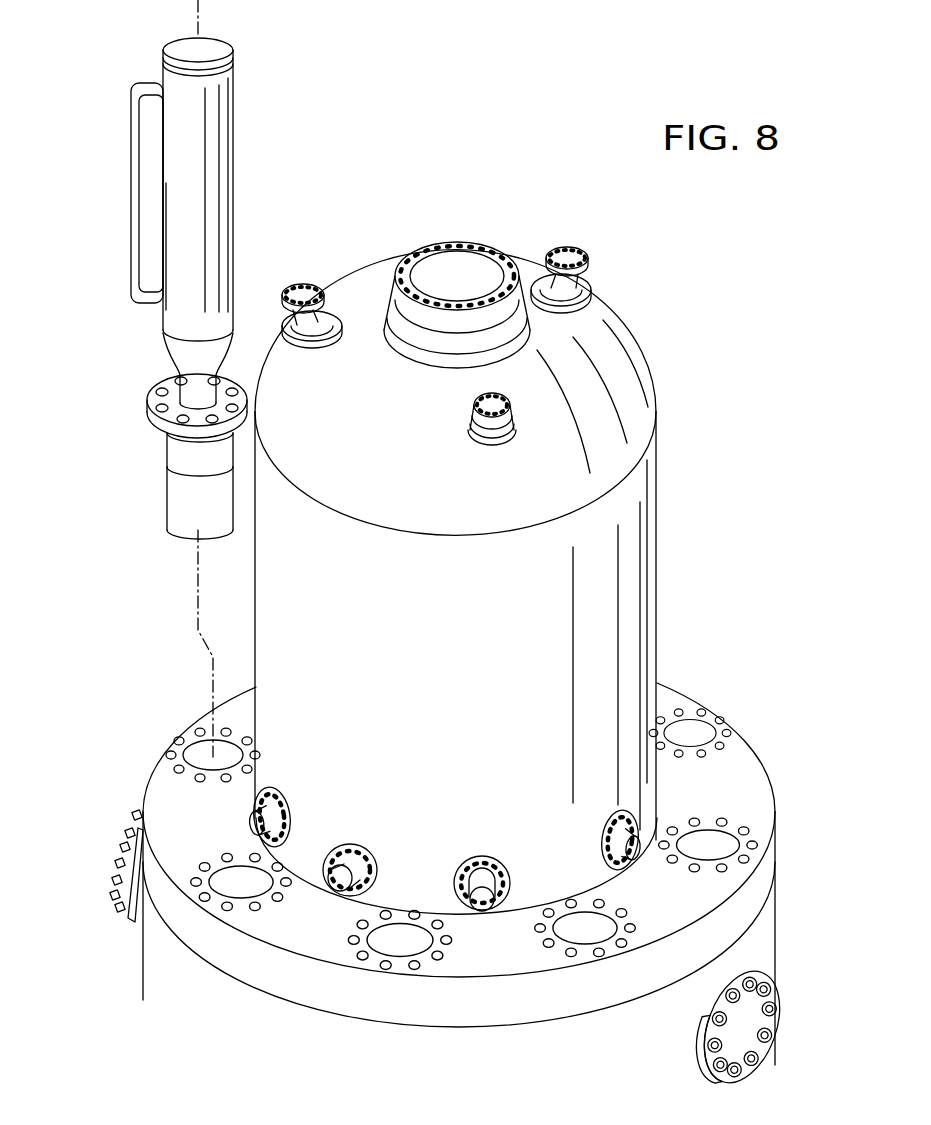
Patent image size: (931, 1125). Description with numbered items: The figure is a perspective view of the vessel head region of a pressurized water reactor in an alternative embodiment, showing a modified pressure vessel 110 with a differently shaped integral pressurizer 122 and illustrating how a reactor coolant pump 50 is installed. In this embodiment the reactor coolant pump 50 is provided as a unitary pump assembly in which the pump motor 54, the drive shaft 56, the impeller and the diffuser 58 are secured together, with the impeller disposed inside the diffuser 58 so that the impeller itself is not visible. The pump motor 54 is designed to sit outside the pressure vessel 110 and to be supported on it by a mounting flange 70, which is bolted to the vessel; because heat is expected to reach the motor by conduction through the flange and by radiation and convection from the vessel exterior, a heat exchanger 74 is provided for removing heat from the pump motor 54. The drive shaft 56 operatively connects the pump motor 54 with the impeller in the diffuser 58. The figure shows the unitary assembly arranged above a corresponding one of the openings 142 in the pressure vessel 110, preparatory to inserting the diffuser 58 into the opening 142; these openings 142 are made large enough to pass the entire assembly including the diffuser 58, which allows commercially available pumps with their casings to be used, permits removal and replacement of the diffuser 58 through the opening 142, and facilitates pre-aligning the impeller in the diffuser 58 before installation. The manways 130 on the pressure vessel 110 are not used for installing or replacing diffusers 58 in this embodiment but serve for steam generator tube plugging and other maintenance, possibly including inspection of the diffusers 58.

The reactor coolant pump 50 is at (132, 45).
The pump motor 54 is at (198, 145).
The heat exchanger 74 is at (132, 200).
The mounting flange 70 is at (152, 380).
The drive shaft 56 is at (168, 450).
The diffuser 58 is at (163, 493).
The integral pressurizer 122 is at (660, 470).
The pressure vessel 110 is at (200, 985).
The opening 142 is at (200, 757).
The manway 130 is at (118, 848).